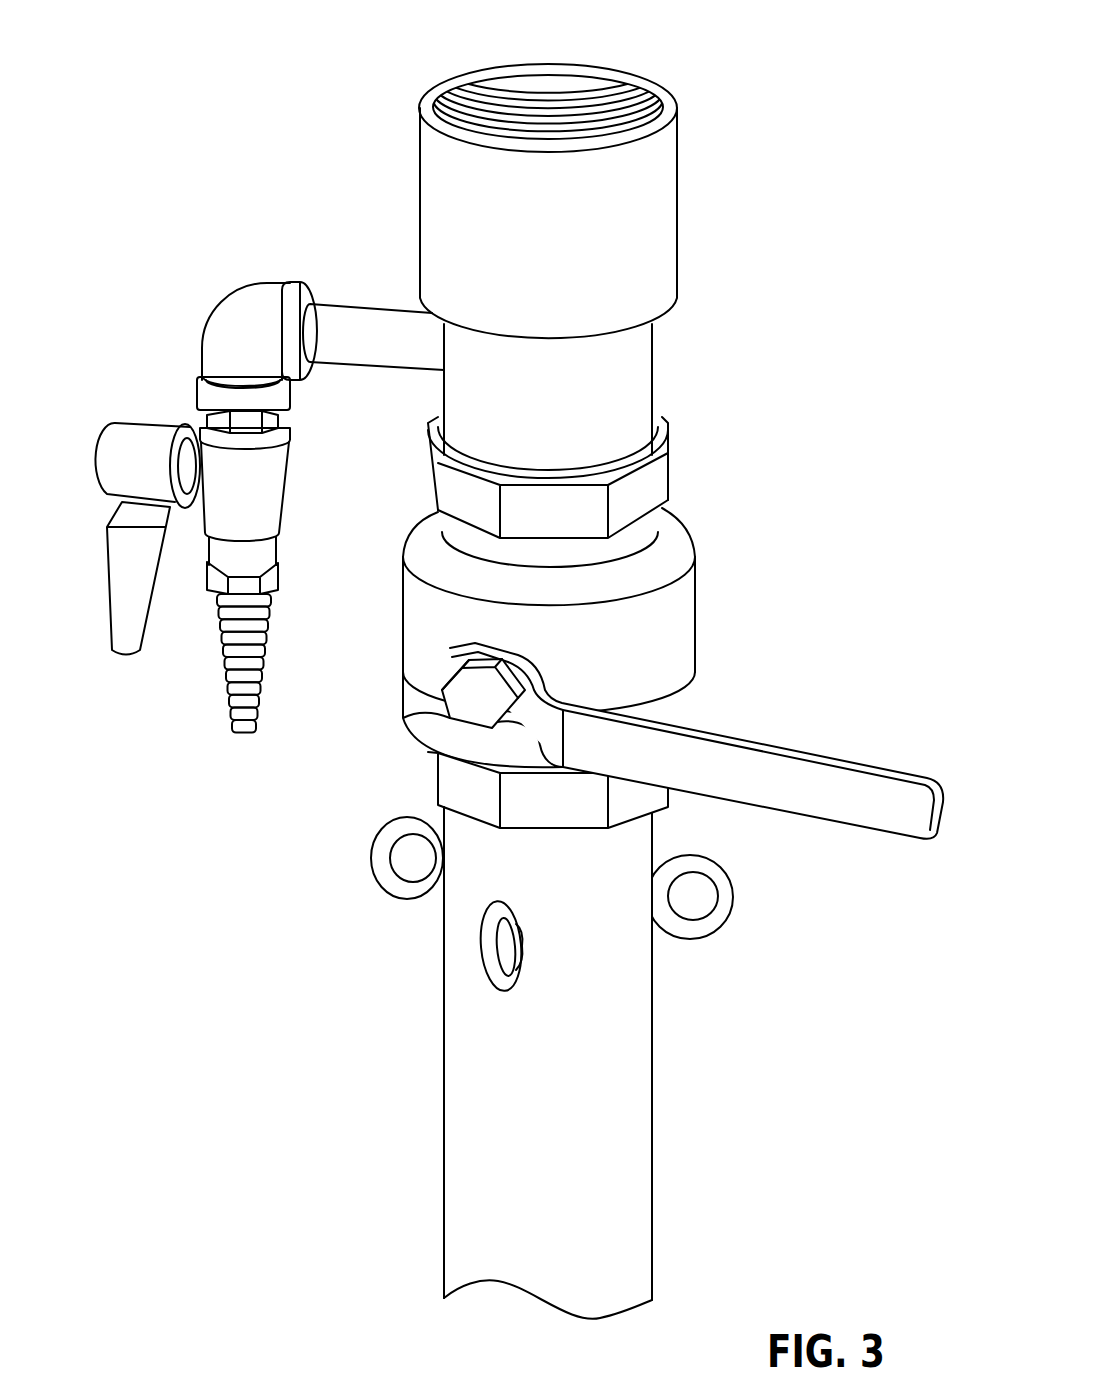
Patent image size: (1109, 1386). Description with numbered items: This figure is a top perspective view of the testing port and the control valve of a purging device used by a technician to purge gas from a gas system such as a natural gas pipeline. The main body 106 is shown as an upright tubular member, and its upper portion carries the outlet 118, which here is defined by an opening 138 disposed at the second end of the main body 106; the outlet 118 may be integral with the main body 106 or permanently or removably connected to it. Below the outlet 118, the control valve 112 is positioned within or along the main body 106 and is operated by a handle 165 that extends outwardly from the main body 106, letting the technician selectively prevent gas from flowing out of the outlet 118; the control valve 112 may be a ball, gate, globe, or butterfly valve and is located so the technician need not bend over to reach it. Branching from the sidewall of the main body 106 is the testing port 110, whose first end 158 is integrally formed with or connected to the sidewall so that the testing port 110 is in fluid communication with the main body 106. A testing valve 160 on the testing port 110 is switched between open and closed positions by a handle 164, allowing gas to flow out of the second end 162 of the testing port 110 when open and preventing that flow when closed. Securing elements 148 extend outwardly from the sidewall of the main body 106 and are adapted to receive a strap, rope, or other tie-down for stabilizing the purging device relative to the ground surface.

The main body 106 is at (652, 1108).
The testing port 110 is at (276, 282).
The control valve 112 is at (403, 727).
The outlet 118 is at (663, 108).
The opening 138 is at (548, 97).
The securing element 148 is at (482, 944).
The first end 158 is at (378, 300).
The testing valve 160 is at (96, 460).
The second end 162 is at (273, 480).
The handle 164 is at (113, 628).
The handle 165 is at (893, 767).